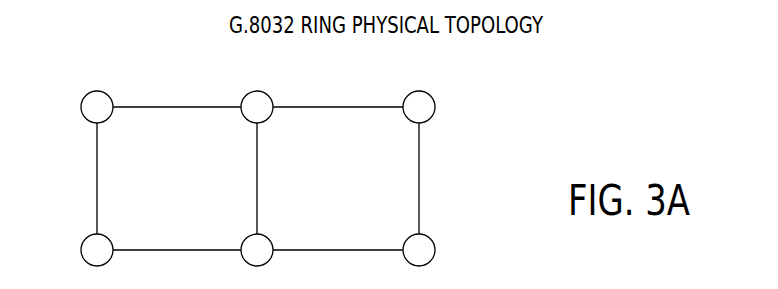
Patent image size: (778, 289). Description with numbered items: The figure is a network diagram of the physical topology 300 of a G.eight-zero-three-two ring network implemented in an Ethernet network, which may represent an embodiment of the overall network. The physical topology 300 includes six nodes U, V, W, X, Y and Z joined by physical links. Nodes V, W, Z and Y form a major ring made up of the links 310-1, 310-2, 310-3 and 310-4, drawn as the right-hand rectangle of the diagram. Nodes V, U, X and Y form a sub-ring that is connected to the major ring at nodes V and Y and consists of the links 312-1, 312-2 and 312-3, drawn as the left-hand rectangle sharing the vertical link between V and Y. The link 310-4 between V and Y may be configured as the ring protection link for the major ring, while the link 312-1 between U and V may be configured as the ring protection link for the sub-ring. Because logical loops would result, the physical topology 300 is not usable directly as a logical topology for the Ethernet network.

The physical topology 300 is at (107, 39).
The link 312-1 is at (160, 106).
The link 312-2 is at (98, 176).
The link 312-3 is at (182, 249).
The link 310-1 is at (350, 106).
The link 310-2 is at (418, 178).
The link 310-3 is at (325, 249).
The link 310-4 is at (258, 152).